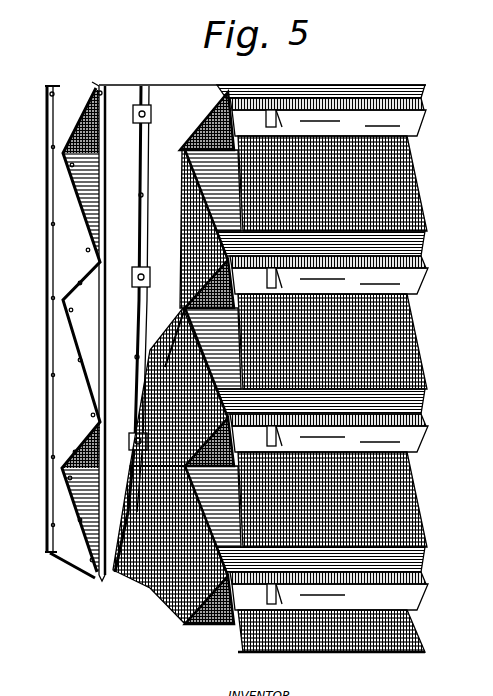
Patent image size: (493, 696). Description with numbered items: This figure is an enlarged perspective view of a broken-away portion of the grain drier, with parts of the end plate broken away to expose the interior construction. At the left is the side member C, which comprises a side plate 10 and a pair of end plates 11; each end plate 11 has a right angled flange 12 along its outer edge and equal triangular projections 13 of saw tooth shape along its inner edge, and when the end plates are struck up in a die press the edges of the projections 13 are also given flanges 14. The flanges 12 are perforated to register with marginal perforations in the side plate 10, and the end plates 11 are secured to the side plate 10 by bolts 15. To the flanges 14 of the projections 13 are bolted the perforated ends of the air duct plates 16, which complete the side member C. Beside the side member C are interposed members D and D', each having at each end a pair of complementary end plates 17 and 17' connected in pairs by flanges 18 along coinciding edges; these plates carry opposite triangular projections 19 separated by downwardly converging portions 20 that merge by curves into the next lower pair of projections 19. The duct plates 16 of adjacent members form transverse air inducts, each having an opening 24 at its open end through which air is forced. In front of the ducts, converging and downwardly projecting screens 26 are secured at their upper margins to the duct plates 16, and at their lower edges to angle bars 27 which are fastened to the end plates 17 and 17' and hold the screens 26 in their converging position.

The side plate 10 is at (47, 192).
The end plate 11 is at (63, 261).
The right angled flange 12 is at (45, 351).
The triangular projection 13 is at (54, 263).
The flange 14 is at (78, 130).
The bolt 15 is at (50, 148).
The air duct plate 16 is at (67, 130).
The end plate 17 is at (121, 77).
The complementary end plate 17' is at (148, 315).
The flange 18 is at (133, 268).
The triangular projection 19 is at (145, 206).
The downwardly converging portion 20 is at (140, 350).
The opening 24 is at (78, 200).
The screen 26 is at (148, 570).
The angle bar 27 is at (402, 124).
The side member C is at (53, 308).
The member D is at (262, 62).
The member D' is at (282, 70).